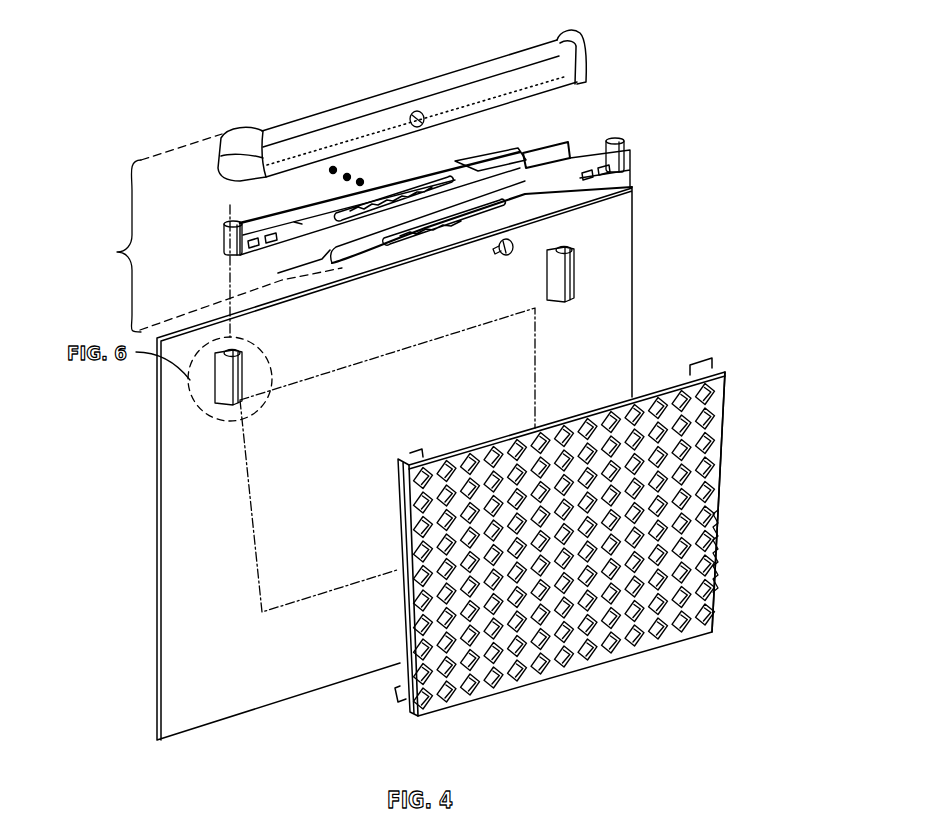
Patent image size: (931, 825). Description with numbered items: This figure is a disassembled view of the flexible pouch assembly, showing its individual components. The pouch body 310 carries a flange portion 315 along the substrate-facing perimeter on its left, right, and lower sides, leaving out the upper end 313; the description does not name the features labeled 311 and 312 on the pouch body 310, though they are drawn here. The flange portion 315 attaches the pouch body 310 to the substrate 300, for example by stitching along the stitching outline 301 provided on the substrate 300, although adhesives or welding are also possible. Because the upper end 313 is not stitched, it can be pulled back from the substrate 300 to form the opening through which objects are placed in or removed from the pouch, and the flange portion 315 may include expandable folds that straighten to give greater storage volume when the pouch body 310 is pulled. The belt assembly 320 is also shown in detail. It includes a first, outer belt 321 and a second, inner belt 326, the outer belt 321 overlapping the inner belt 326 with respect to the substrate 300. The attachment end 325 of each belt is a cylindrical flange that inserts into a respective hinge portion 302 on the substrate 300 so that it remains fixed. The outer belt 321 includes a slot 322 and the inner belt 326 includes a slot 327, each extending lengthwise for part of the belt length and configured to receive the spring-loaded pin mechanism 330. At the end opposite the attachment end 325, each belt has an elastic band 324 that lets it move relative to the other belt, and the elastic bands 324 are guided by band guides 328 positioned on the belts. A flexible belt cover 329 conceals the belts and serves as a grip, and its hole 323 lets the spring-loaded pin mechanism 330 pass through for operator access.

The substrate 300 is at (197, 633).
The stitching outline 301 is at (258, 531).
The hinge portion 302 is at (211, 385).
The pouch body 310 is at (524, 694).
The louver openings 311 is at (648, 617).
The side edge of grille panel 312 is at (657, 492).
The upper end 313 is at (592, 405).
The flange portion 315 is at (700, 364).
The belt assembly 320 is at (208, 233).
The first (outer) belt 321 is at (556, 186).
The slot 322 is at (492, 200).
The hole 323 is at (417, 110).
The elastic band 324 is at (548, 150).
The attachment end 325 is at (231, 222).
The second (inner) belt 326 is at (299, 223).
The slot 327 is at (344, 212).
The band guide 328 is at (270, 241).
The belt cover 329 is at (469, 90).
The spring-loaded pin mechanism 330 is at (371, 178).